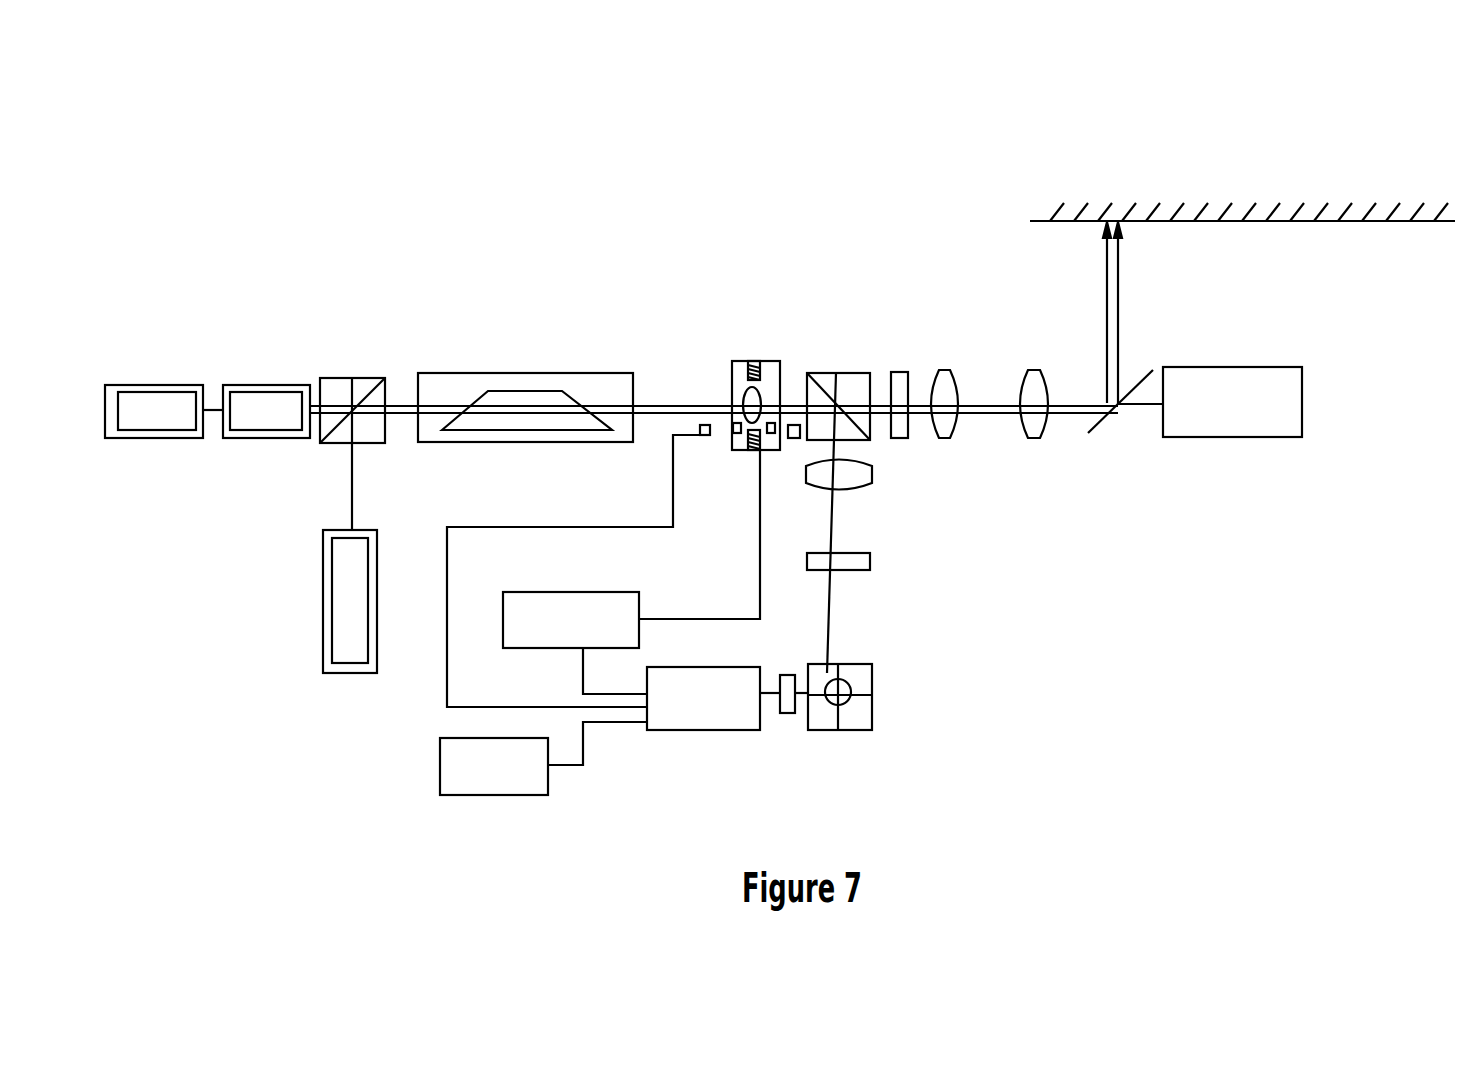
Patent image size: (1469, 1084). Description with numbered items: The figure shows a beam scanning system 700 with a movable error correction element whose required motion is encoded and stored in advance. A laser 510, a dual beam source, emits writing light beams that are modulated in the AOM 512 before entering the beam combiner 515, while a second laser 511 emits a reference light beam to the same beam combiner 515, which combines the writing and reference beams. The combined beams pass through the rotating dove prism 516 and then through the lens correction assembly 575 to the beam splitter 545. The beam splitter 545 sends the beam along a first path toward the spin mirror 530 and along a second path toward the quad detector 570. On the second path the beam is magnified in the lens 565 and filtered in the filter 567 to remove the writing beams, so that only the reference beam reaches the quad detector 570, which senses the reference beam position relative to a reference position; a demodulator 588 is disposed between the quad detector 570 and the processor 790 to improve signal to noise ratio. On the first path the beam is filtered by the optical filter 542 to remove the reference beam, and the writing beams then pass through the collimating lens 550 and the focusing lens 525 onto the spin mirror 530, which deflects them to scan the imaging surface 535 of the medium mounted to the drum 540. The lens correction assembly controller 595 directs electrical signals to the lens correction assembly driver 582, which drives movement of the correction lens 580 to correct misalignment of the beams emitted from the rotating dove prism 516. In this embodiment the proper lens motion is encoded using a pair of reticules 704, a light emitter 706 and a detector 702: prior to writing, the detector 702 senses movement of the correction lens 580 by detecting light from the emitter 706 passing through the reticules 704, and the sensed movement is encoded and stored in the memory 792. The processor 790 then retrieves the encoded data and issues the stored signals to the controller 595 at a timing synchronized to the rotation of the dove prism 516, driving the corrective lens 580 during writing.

The laser 510 is at (157, 385).
The AOM 512 is at (256, 385).
The beam combiner 515 is at (349, 383).
The second laser 511 is at (325, 608).
The rotating dove prism 516 is at (416, 457).
The lens correction assembly 575 is at (741, 350).
The lens correction assembly driver 582 is at (747, 445).
The correction lens 580 is at (762, 393).
The reticules 704 is at (767, 424).
The detector 702 is at (702, 437).
The light emitter 706 is at (791, 440).
The scanning system 700 is at (848, 213).
The beam splitter 545 is at (816, 373).
The optical filter 542 is at (906, 372).
The collimating lens 550 is at (947, 370).
The focusing lens 525 is at (1043, 437).
The drum 540 is at (1262, 218).
The imaging surface 535 is at (1155, 222).
The spin mirror 530 is at (1248, 367).
The lens 565 is at (874, 473).
The filter 567 is at (871, 560).
The quad detector 570 is at (873, 706).
The demodulator 588 is at (789, 713).
The lens correction assembly controller 595 is at (558, 592).
The processor 790 is at (698, 730).
The memory 792 is at (498, 795).